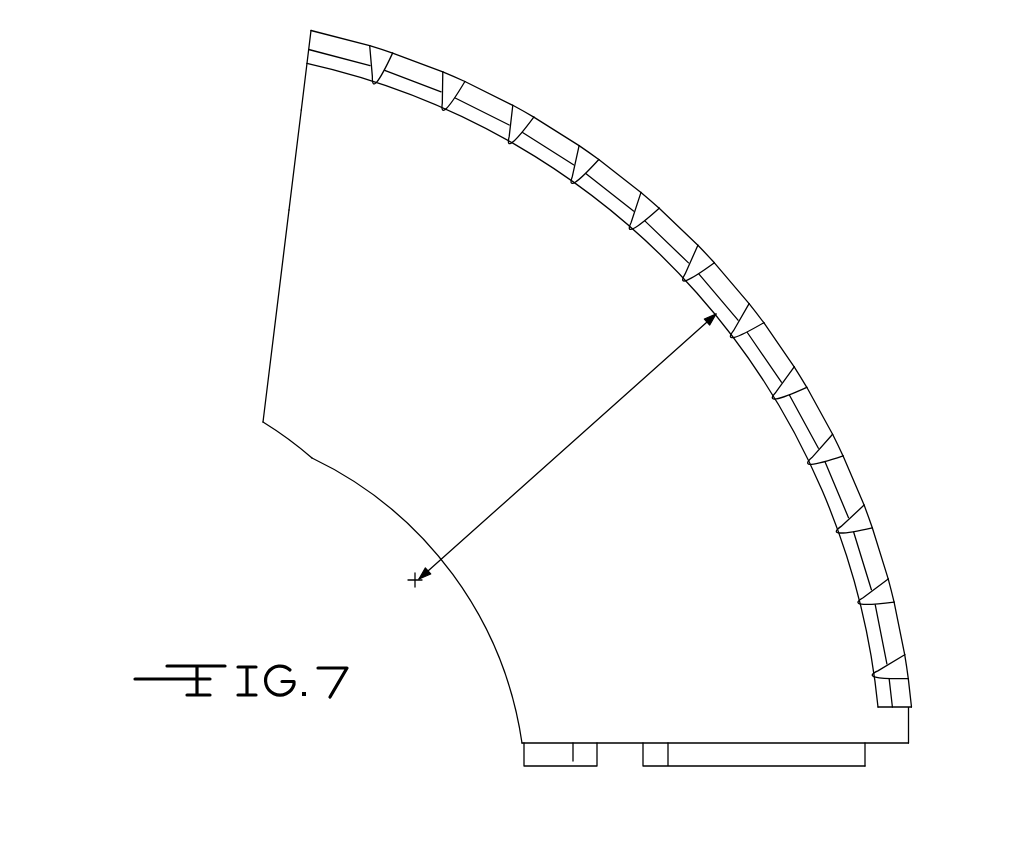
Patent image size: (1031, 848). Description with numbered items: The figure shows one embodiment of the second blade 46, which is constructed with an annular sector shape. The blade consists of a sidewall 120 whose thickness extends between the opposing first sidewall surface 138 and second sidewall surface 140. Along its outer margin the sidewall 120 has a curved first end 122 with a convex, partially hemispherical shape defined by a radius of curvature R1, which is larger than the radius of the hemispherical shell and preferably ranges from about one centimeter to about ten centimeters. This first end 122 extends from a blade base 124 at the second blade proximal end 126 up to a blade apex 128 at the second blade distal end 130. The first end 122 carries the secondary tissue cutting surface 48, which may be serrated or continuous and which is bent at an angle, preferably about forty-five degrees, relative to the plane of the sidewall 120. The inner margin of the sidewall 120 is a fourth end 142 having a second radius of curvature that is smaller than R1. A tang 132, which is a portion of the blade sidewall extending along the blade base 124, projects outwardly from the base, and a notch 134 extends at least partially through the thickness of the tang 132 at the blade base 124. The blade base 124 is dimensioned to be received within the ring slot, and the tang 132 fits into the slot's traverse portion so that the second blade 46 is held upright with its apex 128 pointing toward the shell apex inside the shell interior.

The second blade 46 is at (835, 243).
The secondary tissue cutting surface 48 is at (770, 348).
The sidewall 120 is at (395, 452).
The first end 122 is at (698, 255).
The blade base 124 is at (908, 740).
The second blade proximal end 126 is at (873, 744).
The blade apex 128 is at (307, 65).
The second blade distal end 130 is at (302, 117).
The tang 132 is at (787, 753).
The notch 134 is at (620, 755).
The first sidewall surface 138 is at (546, 272).
The second sidewall surface 140 is at (285, 215).
The fourth end 142 is at (295, 433).
The radius of curvature R1 is at (437, 563).